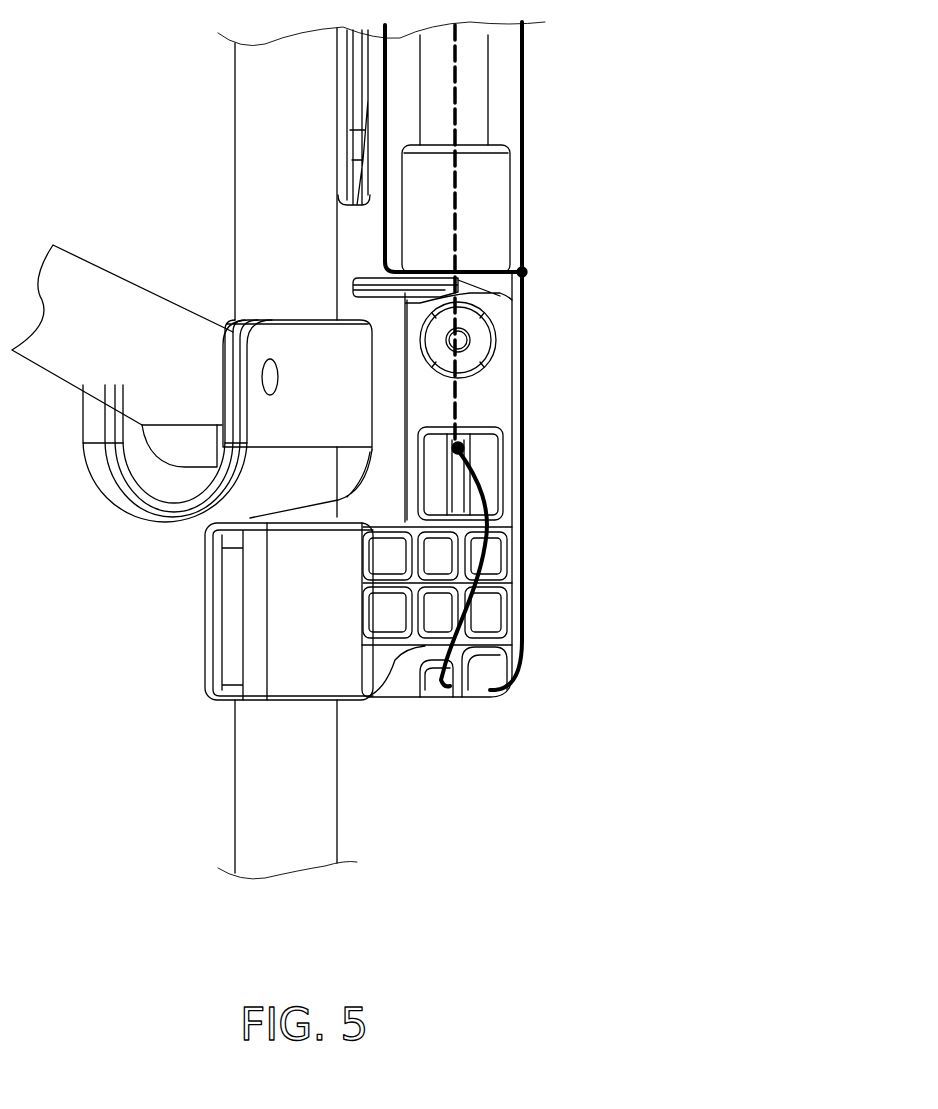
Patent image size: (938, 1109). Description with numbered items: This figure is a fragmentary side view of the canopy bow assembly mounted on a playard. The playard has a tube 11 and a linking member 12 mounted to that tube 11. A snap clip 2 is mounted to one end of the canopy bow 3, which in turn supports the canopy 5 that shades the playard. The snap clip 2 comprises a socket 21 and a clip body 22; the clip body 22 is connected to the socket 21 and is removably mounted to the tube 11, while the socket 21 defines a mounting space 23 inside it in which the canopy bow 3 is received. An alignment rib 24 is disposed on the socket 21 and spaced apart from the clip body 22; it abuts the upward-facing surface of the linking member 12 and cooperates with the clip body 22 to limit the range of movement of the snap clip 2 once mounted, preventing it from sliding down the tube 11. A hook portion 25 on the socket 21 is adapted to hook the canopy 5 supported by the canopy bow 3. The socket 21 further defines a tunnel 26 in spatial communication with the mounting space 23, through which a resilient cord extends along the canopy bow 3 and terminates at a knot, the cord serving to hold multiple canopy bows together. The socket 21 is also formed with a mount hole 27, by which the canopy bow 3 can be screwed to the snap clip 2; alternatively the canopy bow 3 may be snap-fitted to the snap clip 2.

The tube 11 is at (250, 782).
The linking member 12 is at (110, 492).
The snap clip 2 is at (553, 601).
The socket 21 is at (389, 447).
The clip body 22 is at (293, 610).
The mounting space 23 is at (468, 208).
The alignment rib 24 is at (365, 288).
The hook portion 25 is at (440, 690).
The tunnel 26 is at (460, 407).
The mount hole 27 is at (458, 340).
The canopy bow 3 is at (473, 93).
The canopy 5 is at (522, 272).